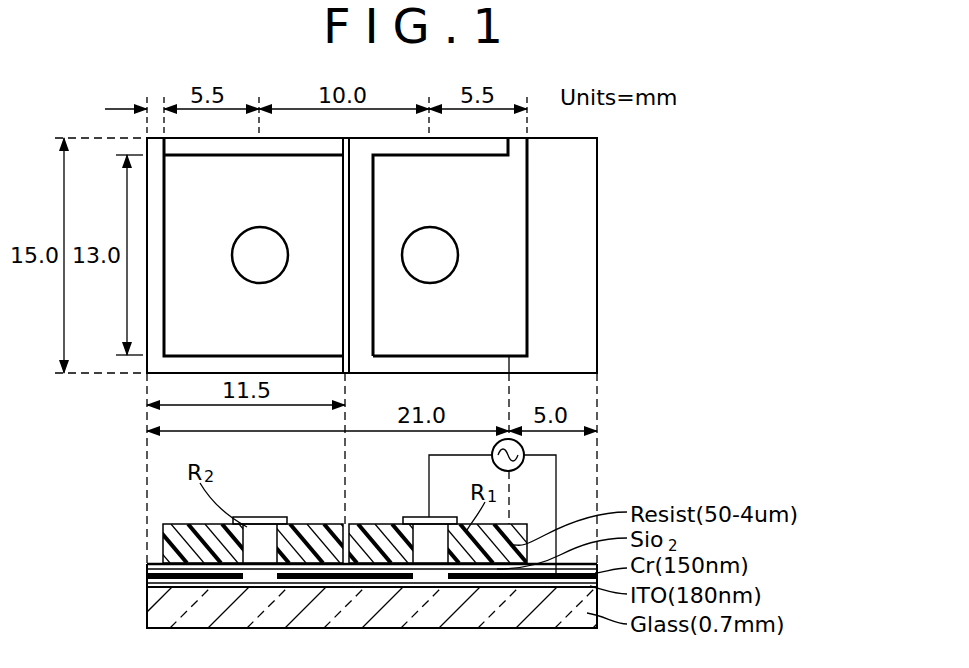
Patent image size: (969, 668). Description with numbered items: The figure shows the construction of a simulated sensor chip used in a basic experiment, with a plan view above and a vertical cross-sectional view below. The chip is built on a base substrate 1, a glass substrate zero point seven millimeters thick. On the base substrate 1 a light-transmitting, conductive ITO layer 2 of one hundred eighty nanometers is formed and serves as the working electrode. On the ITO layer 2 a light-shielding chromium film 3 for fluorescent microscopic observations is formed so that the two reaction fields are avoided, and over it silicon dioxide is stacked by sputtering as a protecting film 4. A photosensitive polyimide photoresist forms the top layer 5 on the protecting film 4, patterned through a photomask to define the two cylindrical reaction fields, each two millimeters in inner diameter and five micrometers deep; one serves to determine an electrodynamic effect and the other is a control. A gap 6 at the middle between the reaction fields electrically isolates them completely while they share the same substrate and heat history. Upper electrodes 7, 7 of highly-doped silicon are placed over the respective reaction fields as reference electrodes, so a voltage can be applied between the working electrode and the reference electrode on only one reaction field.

The base substrate 1 is at (160, 607).
The ITO layer 2 is at (155, 583).
The light-shielding chromium film 3 is at (145, 577).
The protecting film 4 is at (157, 565).
The top layer 5 is at (303, 203).
The gap 6 is at (343, 308).
The upper electrodes 7 is at (260, 268).